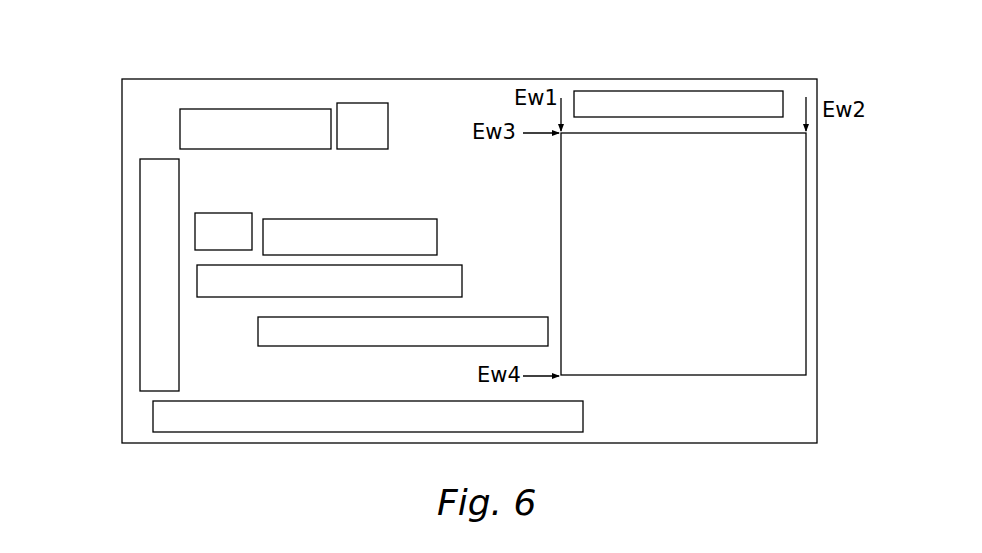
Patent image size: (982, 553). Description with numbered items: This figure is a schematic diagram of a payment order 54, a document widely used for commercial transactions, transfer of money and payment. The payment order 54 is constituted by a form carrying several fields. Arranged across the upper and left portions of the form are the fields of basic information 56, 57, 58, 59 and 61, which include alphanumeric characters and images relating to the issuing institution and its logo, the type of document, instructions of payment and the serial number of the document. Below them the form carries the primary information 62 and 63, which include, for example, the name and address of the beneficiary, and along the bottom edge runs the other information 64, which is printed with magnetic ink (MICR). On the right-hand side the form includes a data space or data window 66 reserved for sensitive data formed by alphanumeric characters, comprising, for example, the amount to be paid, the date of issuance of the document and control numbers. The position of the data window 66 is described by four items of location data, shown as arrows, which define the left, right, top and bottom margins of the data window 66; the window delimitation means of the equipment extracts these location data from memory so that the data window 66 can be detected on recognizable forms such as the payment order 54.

The payment order 54 is at (100, 67).
The basic information 56 is at (204, 117).
The basic information 57 is at (359, 142).
The basic information 58 is at (692, 106).
The basic information 59 is at (213, 222).
The basic information 61 is at (147, 203).
The primary information 62 is at (444, 272).
The primary information 63 is at (280, 337).
The other information 64 is at (575, 412).
The data window 66 is at (777, 190).